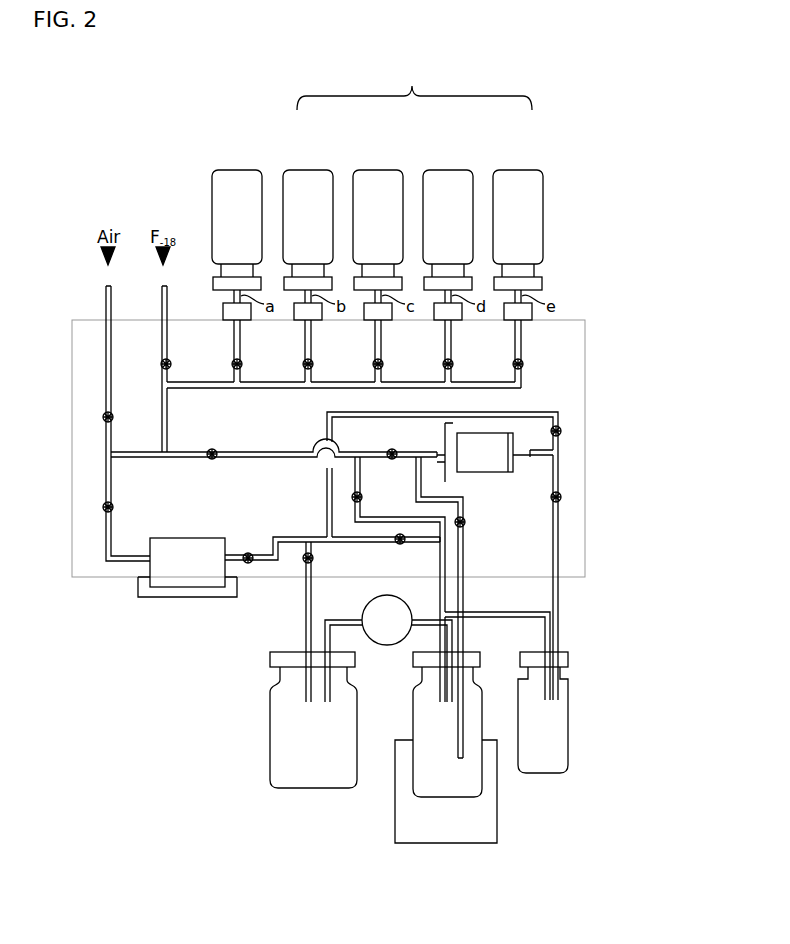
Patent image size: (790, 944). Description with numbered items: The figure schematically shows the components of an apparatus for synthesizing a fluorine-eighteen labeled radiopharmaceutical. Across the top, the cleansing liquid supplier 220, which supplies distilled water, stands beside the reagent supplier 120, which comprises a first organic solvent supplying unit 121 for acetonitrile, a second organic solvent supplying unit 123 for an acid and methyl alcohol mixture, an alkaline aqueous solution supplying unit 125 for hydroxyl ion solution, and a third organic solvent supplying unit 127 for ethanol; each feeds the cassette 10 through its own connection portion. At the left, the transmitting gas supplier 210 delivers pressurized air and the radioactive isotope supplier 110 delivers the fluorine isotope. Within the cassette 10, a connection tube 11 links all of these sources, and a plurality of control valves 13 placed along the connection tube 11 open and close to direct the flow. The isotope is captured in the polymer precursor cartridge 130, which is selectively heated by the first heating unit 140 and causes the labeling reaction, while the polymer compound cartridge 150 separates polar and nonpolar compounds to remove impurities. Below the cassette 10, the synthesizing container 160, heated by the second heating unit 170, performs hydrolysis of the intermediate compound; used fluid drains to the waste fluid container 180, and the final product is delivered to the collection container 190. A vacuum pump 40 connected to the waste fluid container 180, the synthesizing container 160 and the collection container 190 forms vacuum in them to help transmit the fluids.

The cassette 10 is at (570, 371).
The connection tube 11 is at (273, 540).
The control valves 13 is at (161, 364).
The vacuum pump 40 is at (387, 646).
The F-18 radioactive isotope supplier 110 is at (159, 260).
The reagent supplier 120 is at (414, 87).
The first organic solvent supplying unit 121 is at (308, 170).
The second organic solvent supplying unit 123 is at (378, 170).
The alkaline aqueous solution supplying unit 125 is at (448, 170).
The third organic solvent supplying unit 127 is at (518, 170).
The polymer precursor cartridge 130 is at (155, 567).
The first heating unit 140 is at (187, 597).
The polymer compound cartridge 150 is at (485, 462).
The synthesizing container 160 is at (458, 772).
The second heating unit 170 is at (490, 817).
The waste fluid container 180 is at (312, 772).
The collection container 190 is at (548, 742).
The transmitting gas supplier 210 is at (103, 260).
The cleansing liquid supplier 220 is at (237, 170).